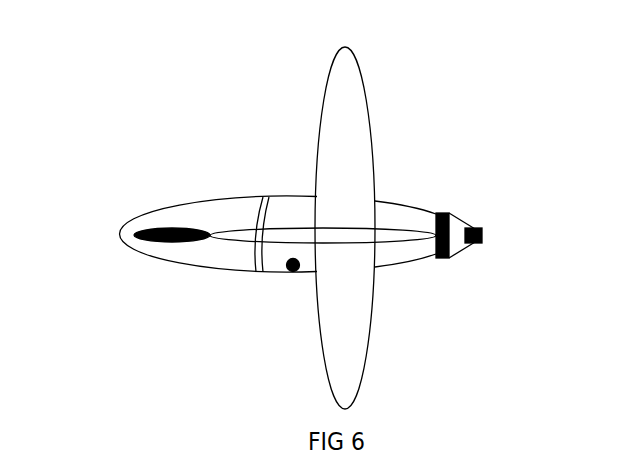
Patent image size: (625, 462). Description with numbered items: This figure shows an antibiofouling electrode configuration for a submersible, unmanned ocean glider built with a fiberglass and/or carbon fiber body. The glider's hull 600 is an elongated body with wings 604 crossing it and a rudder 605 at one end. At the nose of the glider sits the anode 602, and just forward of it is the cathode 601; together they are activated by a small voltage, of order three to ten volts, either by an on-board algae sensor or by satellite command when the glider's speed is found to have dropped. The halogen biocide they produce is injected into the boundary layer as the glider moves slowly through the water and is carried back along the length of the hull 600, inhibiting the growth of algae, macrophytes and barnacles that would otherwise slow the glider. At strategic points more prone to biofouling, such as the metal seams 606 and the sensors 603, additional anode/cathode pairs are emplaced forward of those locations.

The hull 600 is at (225, 213).
The cathode 601 is at (493, 235).
The anode 602 is at (462, 247).
The sensors 603 is at (285, 273).
The wings 604 is at (343, 138).
The rudder 605 is at (135, 246).
The metal seams 606 is at (302, 226).